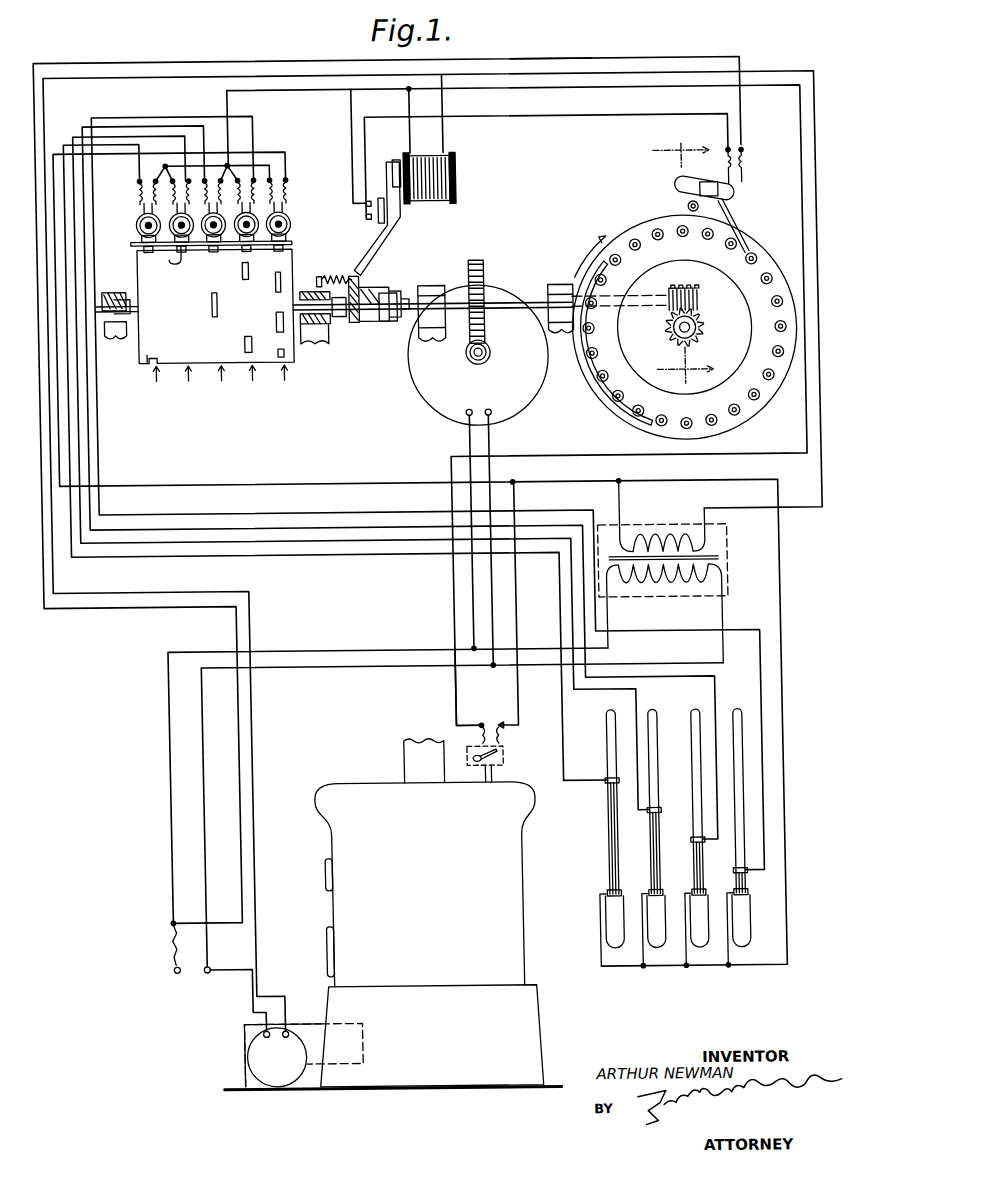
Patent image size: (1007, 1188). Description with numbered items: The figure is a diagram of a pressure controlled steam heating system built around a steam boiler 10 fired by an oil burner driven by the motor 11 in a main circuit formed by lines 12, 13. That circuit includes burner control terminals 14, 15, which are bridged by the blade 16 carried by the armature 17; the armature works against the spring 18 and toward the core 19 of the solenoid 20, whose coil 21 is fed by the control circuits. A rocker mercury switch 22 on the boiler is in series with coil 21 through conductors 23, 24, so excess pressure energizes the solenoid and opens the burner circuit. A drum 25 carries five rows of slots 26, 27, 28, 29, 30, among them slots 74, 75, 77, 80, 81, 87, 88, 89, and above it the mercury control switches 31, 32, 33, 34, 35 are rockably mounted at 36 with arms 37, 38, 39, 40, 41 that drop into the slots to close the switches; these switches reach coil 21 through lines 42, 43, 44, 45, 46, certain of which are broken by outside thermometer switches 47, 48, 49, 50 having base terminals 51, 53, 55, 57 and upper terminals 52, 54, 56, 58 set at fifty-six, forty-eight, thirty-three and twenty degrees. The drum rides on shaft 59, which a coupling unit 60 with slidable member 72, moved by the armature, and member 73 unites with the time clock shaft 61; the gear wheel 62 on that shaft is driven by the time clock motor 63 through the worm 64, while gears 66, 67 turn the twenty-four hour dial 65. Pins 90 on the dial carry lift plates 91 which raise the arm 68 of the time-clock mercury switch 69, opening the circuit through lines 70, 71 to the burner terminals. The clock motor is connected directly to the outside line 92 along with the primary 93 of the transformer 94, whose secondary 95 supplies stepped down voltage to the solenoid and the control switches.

The steam boiler 10 is at (349, 774).
The motor 11 is at (240, 1054).
The main circuit line 12 is at (118, 604).
The main circuit line 13 is at (152, 589).
The burner control terminal 14 is at (372, 216).
The burner control terminal 15 is at (372, 202).
The blade or switch element 16 is at (382, 224).
The armature 17 is at (391, 210).
The spring 18 is at (336, 276).
The core 19 is at (402, 158).
The solenoid 20 is at (462, 178).
The coil 21 is at (434, 154).
The rocker mercury switch 22 is at (498, 755).
The conductor 23 is at (450, 688).
The conductor 24 is at (516, 688).
The drum 25 is at (298, 349).
The row of slots 26 is at (156, 382).
The row of slots 27 is at (188, 382).
The row of slots 28 is at (220, 382).
The row of slots 29 is at (252, 381).
The row of slots 30 is at (284, 381).
The mercury control switch 31 is at (142, 225).
The mercury control switch 32 is at (184, 218).
The mercury control switch 33 is at (231, 216).
The mercury control switch 34 is at (262, 218).
The mercury control switch 35 is at (296, 224).
The rockable mounting 36 is at (299, 241).
The switch arm 37 is at (150, 249).
The switch arm 38 is at (185, 250).
The switch arm 39 is at (218, 249).
The switch arm 40 is at (253, 249).
The switch arm 41 is at (288, 250).
The line 42 is at (71, 176).
The line 43 is at (80, 240).
The line 44 is at (89, 282).
The line 45 is at (87, 377).
The line 46 is at (60, 416).
The thermometer switch 47 is at (599, 848).
The thermometer switch 48 is at (644, 849).
The thermometer switch 49 is at (687, 869).
The thermometer switch 50 is at (746, 884).
The base terminal 51 is at (600, 892).
The upper terminal 52 is at (600, 785).
The base terminal 53 is at (644, 892).
The upper terminal 54 is at (646, 812).
The base terminal 55 is at (702, 892).
The upper terminal 56 is at (700, 843).
The base terminal 57 is at (742, 896).
The upper terminal 58 is at (740, 870).
The shaft 59 is at (334, 318).
The coupling unit 60 is at (392, 286).
The time clock shaft 61 is at (526, 300).
The gear wheel 62 is at (486, 270).
The time clock motor 63 is at (414, 386).
The worm 64 is at (488, 358).
The twenty-four hour dial 65 is at (604, 418).
The gear 66 is at (688, 289).
The gear 67 is at (696, 342).
The switch arm 68 is at (754, 238).
The time-clock mercury switch 69 is at (686, 184).
The line 70 is at (544, 120).
The line 71 is at (570, 58).
The slidable member 72 is at (344, 316).
The coupling member 73 is at (388, 322).
The slot 74 is at (156, 354).
The slot 75 is at (186, 266).
The slot 77 is at (215, 312).
The slot 80 is at (249, 276).
The slot 81 is at (247, 338).
The slot 87 is at (279, 288).
The slot 88 is at (279, 318).
The slot 89 is at (288, 353).
The pin 90 is at (602, 370).
The lift plate 91 is at (604, 286).
The outside line 92 is at (196, 972).
The primary 93 is at (652, 586).
The transformer 94 is at (732, 559).
The secondary 95 is at (674, 516).